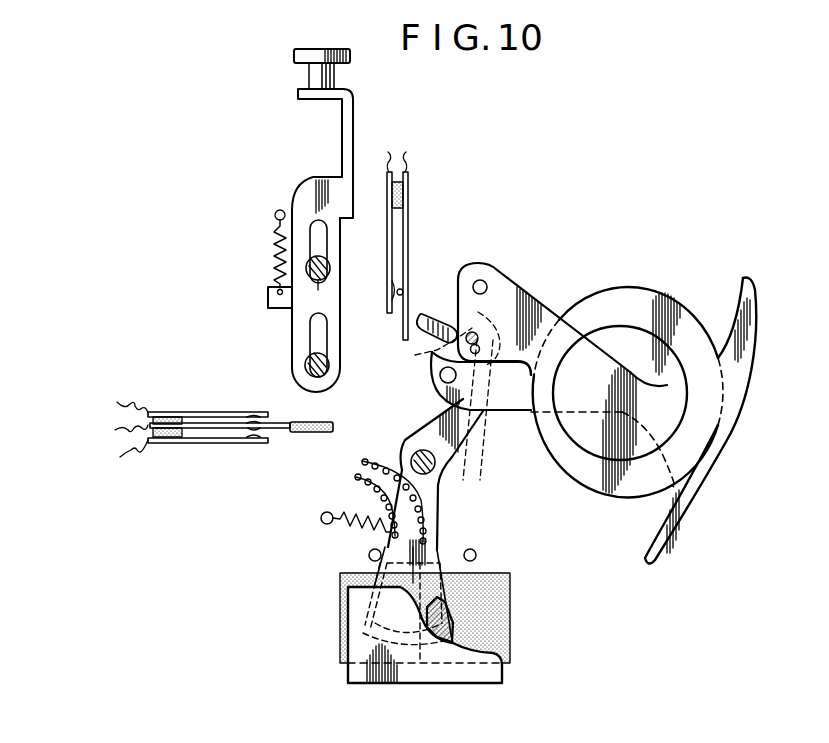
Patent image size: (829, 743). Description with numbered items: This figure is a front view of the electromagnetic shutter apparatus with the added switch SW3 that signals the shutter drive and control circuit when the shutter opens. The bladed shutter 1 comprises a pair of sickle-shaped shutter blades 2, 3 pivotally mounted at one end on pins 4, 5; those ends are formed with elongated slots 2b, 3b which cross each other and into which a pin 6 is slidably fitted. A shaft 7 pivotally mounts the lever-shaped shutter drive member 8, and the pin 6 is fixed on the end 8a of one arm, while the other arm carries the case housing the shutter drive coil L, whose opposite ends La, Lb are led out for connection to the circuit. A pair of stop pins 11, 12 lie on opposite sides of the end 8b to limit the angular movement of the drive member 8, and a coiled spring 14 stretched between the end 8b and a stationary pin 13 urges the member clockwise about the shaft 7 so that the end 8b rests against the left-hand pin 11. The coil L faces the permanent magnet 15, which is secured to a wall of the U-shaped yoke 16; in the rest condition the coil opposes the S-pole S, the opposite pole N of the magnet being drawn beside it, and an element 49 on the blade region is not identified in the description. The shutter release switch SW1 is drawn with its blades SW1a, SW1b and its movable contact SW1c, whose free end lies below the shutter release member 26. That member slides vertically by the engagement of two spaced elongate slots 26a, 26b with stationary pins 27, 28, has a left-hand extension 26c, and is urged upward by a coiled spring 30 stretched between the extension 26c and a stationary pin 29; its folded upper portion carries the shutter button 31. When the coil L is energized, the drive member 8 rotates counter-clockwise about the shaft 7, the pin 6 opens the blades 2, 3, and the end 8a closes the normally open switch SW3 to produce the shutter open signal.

The bladed shutter 1 is at (596, 278).
The shutter blade 2 is at (590, 387).
The elongated slot 2b is at (468, 322).
The shutter blade 3 is at (673, 312).
The elongated slot 3b is at (432, 349).
The pin 4 is at (440, 378).
The pin 5 is at (487, 283).
The pin 6 is at (478, 332).
The shaft 7 is at (418, 453).
The shutter drive member 8 is at (422, 519).
The end of one arm 8a is at (460, 345).
The end of other arm 8b is at (437, 537).
The stop pin 11 is at (369, 555).
The stop pin 12 is at (476, 555).
The stationary pin 13 is at (321, 518).
The coiled spring 14 is at (357, 524).
The permanent magnet 15 is at (442, 634).
The yoke 16 is at (505, 676).
The shutter release member 26 is at (302, 240).
The elongate slot 26a is at (322, 250).
The elongate slot 26b is at (318, 343).
The extension 26c is at (268, 296).
The stationary pin 27 is at (330, 268).
The stationary pin 28 is at (330, 368).
The stationary pin 29 is at (275, 214).
The coiled spring 30 is at (274, 249).
The shutter button 31 is at (305, 55).
The hub 49 is at (689, 396).
The shutter drive coil L is at (450, 615).
The coil end La is at (356, 476).
The coil end Lb is at (368, 460).
The S-pole S is at (353, 620).
The north pole N is at (508, 624).
The shutter release switch SW1 is at (224, 441).
The switch blade SW1a is at (193, 477).
The switch blade SW1b is at (210, 412).
The movable contact SW1c is at (277, 424).
The switch SW3 is at (404, 228).